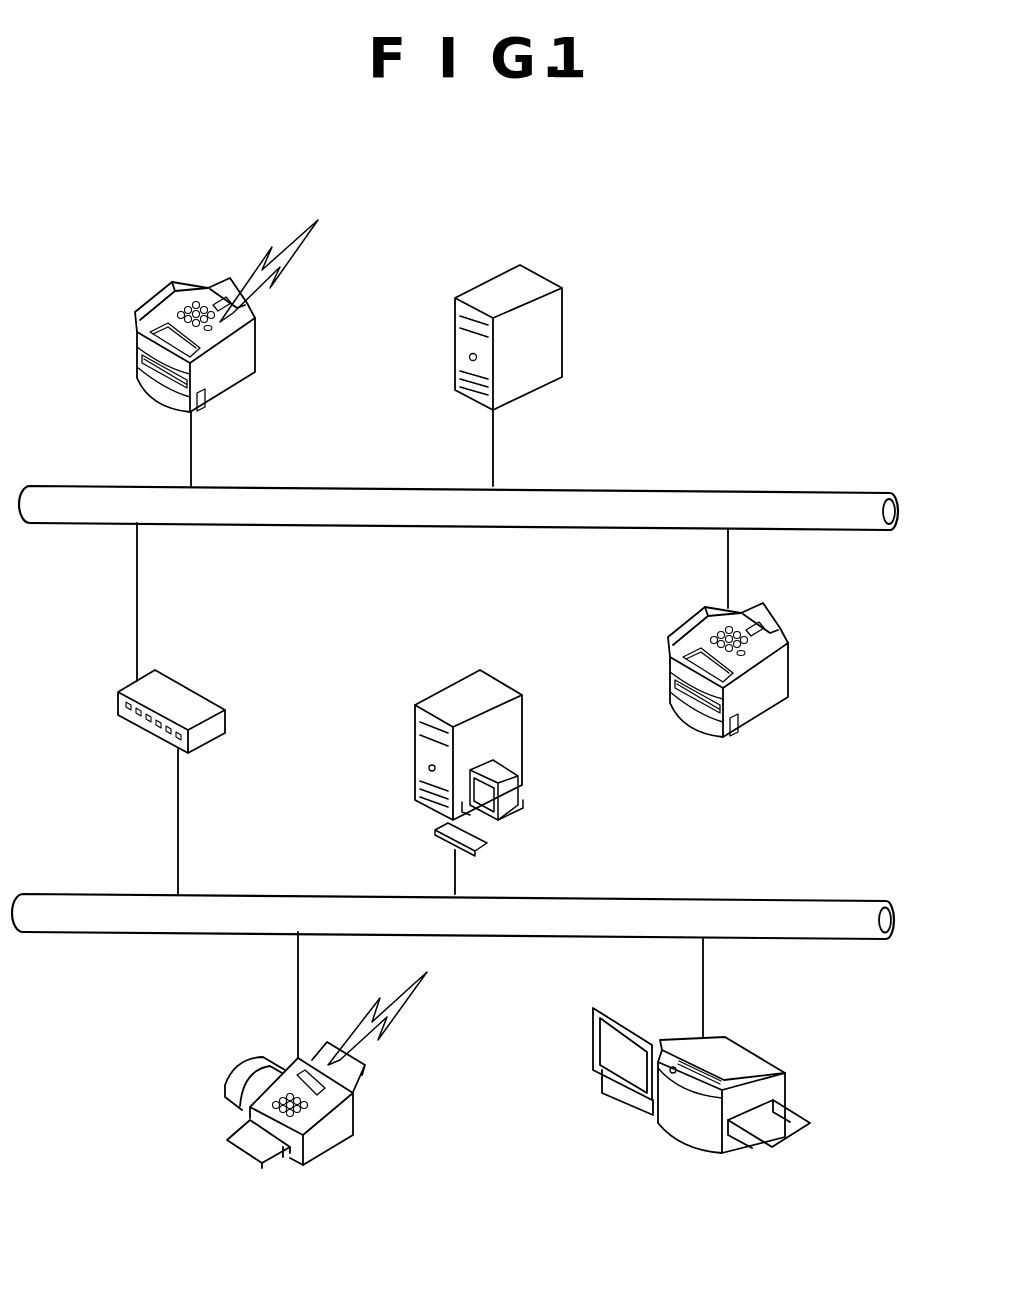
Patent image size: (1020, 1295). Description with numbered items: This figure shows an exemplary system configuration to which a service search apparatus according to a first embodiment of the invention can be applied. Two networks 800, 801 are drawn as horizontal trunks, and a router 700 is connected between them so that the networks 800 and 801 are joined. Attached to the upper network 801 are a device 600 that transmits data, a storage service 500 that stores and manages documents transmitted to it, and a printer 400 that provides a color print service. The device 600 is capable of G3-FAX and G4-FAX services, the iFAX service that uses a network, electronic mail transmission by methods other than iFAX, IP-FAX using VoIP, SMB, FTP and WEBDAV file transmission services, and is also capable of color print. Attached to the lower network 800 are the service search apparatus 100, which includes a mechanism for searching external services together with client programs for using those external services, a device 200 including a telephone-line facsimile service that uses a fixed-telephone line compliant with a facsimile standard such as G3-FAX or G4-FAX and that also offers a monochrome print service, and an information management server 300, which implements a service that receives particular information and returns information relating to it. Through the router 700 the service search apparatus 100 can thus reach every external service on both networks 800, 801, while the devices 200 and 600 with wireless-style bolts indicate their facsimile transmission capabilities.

The service search apparatus 100 is at (790, 1028).
The device including a telephone-line facsimile service 200 is at (245, 1065).
The information management server 300 is at (505, 683).
The printer 400 is at (775, 608).
The storage service 500 is at (578, 253).
The data transmitting device 600 is at (162, 292).
The router 700 is at (197, 693).
The network 800 is at (858, 901).
The network 801 is at (862, 493).